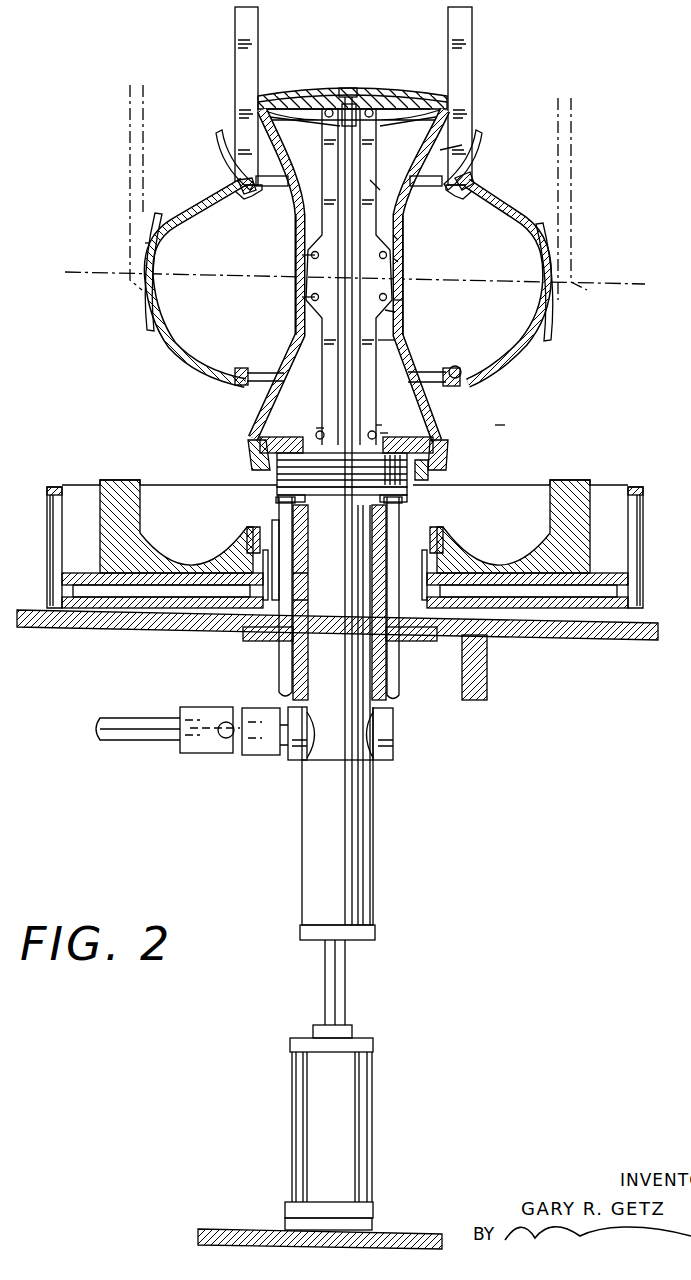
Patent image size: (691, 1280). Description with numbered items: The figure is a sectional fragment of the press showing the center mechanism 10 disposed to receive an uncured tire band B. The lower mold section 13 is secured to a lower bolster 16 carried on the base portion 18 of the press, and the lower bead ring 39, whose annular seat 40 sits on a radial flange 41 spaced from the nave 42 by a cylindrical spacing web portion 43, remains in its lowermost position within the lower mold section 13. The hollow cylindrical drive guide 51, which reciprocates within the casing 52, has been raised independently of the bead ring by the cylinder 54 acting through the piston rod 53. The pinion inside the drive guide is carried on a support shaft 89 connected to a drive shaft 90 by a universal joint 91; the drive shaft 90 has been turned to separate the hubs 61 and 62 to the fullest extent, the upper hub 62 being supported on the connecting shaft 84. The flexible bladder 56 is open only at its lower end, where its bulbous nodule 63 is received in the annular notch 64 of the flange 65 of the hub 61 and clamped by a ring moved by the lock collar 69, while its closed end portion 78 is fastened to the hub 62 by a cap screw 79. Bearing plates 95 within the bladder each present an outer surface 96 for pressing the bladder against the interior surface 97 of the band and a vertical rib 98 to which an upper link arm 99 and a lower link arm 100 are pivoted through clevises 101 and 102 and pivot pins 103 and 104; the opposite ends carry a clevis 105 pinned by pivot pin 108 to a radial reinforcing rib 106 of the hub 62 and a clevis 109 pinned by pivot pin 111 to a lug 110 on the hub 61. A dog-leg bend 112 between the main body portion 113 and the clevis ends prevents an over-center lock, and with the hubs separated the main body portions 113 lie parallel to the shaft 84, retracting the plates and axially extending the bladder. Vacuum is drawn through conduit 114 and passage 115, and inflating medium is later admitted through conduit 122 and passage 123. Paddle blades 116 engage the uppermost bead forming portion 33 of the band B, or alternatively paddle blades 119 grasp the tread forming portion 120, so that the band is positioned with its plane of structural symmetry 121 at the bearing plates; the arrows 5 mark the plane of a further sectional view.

The shaft 5 is at (357, 400).
The center mechanism 10 is at (505, 430).
The lower mold section 13 is at (570, 492).
The lower bolster 16 is at (548, 633).
The base portion 18 is at (409, 1230).
The uppermost bead forming portion 33 is at (243, 184).
The lower bead ring 39 is at (448, 530).
The annular seat 40 is at (252, 532).
The radial flange 41 is at (262, 555).
The nave 42 is at (302, 582).
The cylindrical spacing web portion 43 is at (278, 570).
The drive guide 51 is at (306, 825).
The casing 52 is at (383, 692).
The piston rod 53 is at (325, 964).
The cylinder 54 is at (352, 1081).
The bladder 56 is at (288, 206).
The hub 61 is at (441, 455).
The hub 62 is at (403, 90).
The bulbous nodule 63 is at (428, 468).
The annular notch 64 is at (258, 449).
The flange 65 is at (257, 438).
The lock collar 69 is at (405, 484).
The closed end portion 78 is at (297, 94).
The cap screw 79 is at (347, 92).
The connecting shaft 84 is at (340, 317).
The support shaft 89 is at (283, 757).
The drive shaft 90 is at (136, 718).
The universal joint 91 is at (221, 696).
The bearing plates 95 is at (285, 246).
The outer surface 96 is at (296, 262).
The interior surface 97 is at (163, 251).
The vertical rib 98 is at (298, 290).
The upper link arm 99 is at (383, 183).
The lower link arm 100 is at (385, 345).
The clevis 101 is at (399, 240).
The clevis 102 is at (384, 312).
The pivot pin 103 is at (403, 262).
The pivot pin 104 is at (404, 300).
The clevis 105 is at (382, 122).
The radial reinforcing rib 106 is at (268, 113).
The pivot pin 108 is at (383, 95).
The clevis 109 is at (380, 426).
The lug 110 is at (318, 428).
The pivot pin 111 is at (386, 433).
The dog-leg bend 112 is at (462, 150).
The main body portion 113 is at (440, 177).
The conduit 114 is at (284, 661).
The passage 115 is at (278, 467).
The paddle blades 116 is at (240, 30).
The paddle blades 119 is at (130, 164).
The tread forming portion 120 is at (146, 288).
The plane of structural symmetry 121 is at (605, 290).
The conduit 122 is at (392, 665).
The passage 123 is at (333, 513).
The uncured tire band B is at (136, 247).